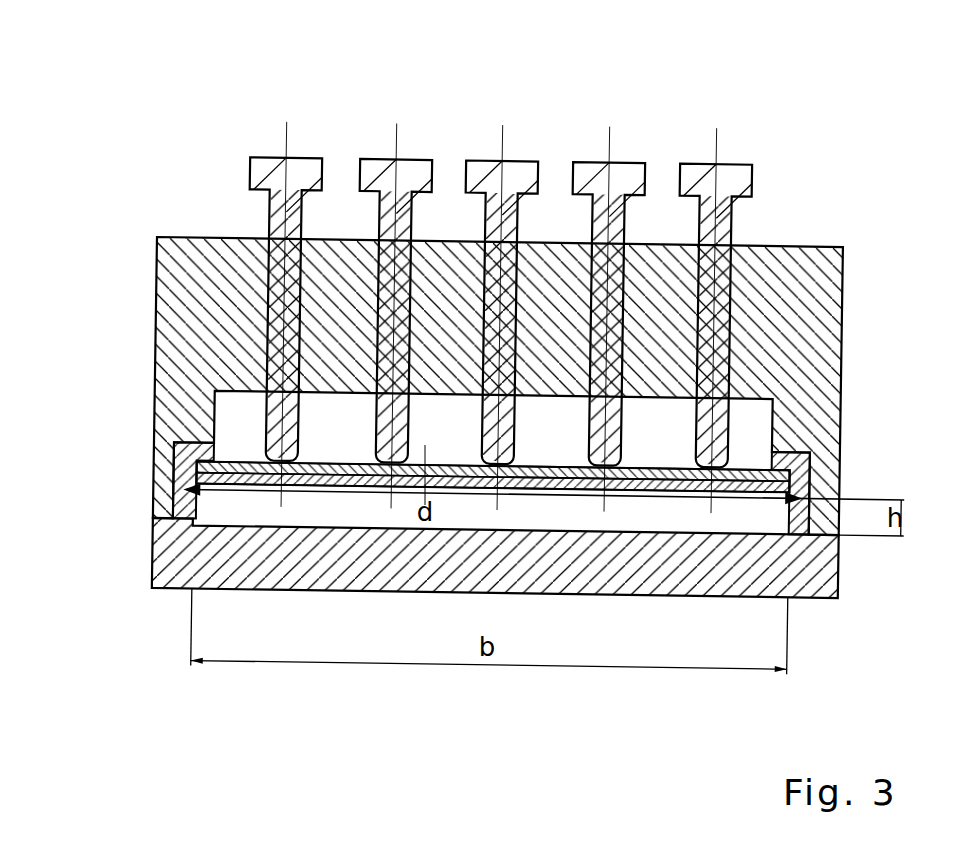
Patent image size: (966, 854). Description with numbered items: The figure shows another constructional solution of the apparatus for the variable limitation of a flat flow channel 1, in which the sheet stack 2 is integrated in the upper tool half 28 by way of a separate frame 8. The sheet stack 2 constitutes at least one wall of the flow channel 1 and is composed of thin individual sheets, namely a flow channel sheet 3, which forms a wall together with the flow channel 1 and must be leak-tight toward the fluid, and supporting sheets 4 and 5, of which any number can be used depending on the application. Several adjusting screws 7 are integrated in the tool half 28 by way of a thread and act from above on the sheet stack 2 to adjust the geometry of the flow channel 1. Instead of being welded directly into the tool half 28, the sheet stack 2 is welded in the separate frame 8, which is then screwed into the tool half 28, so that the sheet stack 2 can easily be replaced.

The flow channel 1 is at (203, 470).
The sheet stack 2 is at (214, 462).
The flow channel sheet 3 is at (250, 460).
The supporting sheet 4 is at (262, 460).
The supporting sheet 5 is at (332, 505).
The adjusting screw 7 is at (407, 170).
The frame 8 is at (792, 452).
The upper tool half 28 is at (843, 360).